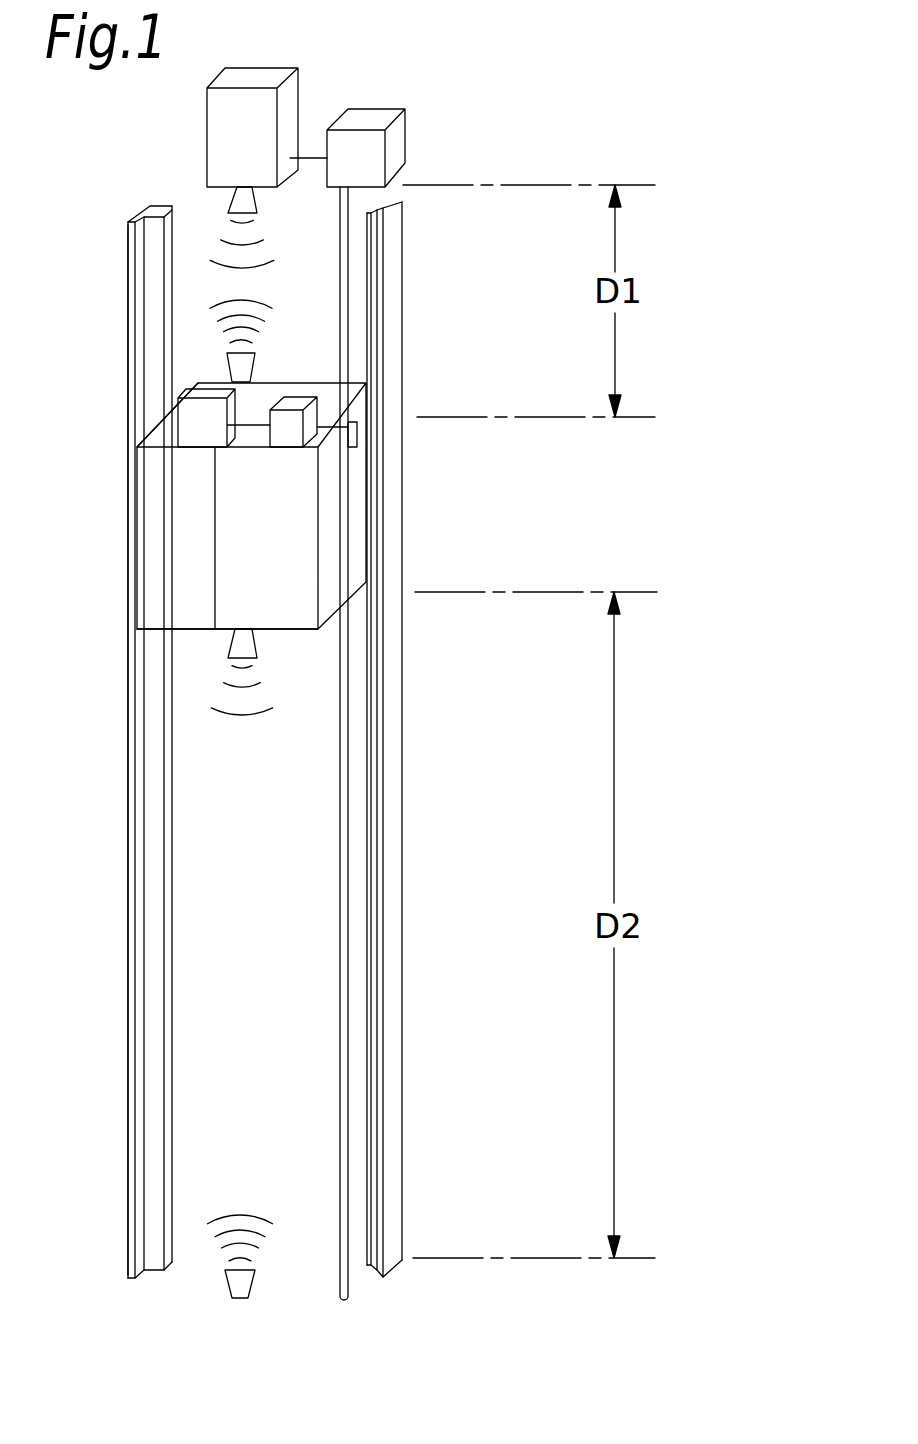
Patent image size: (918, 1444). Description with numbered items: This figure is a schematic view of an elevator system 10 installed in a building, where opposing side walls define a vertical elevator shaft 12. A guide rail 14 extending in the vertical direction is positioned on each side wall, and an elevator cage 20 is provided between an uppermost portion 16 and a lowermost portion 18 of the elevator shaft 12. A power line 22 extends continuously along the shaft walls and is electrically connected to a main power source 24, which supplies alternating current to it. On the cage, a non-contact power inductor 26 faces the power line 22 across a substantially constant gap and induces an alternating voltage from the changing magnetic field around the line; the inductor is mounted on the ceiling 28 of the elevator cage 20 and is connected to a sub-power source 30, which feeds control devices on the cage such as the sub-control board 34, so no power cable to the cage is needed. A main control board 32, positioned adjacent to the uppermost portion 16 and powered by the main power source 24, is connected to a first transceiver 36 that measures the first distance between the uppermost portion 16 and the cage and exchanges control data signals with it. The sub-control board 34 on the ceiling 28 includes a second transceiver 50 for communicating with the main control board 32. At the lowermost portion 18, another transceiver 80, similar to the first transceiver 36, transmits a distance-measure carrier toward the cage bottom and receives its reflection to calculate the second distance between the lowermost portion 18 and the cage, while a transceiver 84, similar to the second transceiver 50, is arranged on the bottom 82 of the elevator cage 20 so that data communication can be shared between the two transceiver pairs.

The elevator system 10 is at (101, 289).
The elevator shaft 12 is at (281, 877).
The guide rail 14 is at (128, 820).
The uppermost portion 16 is at (322, 237).
The lowermost portion 18 is at (320, 1293).
The elevator cage 20 is at (163, 538).
The power line 22 is at (348, 720).
The main power source 24 is at (398, 145).
The non-contact power inductor 26 is at (357, 430).
The ceiling 28 is at (165, 437).
The sub-power source 30 is at (300, 402).
The main control board 32 is at (270, 75).
The sub-control board 34 is at (198, 410).
The first transceiver 36 is at (230, 210).
The second transceiver 50 is at (250, 370).
The transceiver 80 is at (250, 1275).
The bottom 82 is at (193, 622).
The transceiver 84 is at (253, 650).